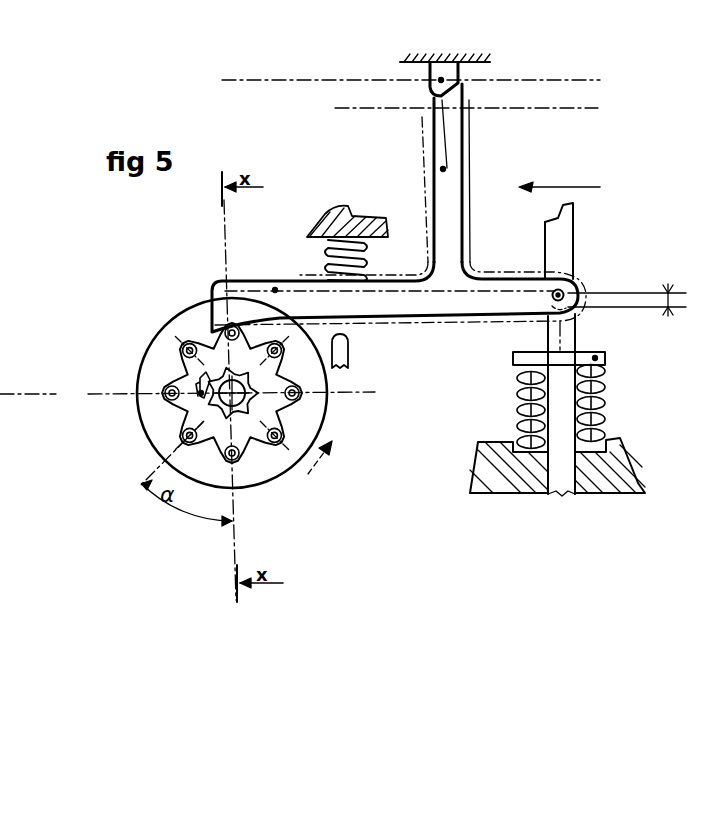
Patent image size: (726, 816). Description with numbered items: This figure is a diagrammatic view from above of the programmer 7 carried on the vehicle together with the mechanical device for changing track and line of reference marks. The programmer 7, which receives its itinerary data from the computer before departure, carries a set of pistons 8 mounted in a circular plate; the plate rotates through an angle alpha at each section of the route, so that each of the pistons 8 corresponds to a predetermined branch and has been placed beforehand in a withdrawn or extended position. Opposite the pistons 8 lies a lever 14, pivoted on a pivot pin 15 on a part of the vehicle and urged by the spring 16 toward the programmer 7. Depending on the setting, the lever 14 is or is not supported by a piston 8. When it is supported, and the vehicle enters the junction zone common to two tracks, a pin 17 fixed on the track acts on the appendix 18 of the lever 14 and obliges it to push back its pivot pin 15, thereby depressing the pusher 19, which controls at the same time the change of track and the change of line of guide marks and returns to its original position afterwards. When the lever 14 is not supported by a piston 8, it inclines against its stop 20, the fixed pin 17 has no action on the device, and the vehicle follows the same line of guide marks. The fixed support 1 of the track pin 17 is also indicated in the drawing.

The fixed support 1 is at (412, 61).
The programmer 7 is at (92, 340).
The pistons 8 is at (298, 397).
The lever 14 is at (275, 290).
The pivot pin 15 is at (564, 293).
The spring 16 is at (366, 250).
The pin 17 is at (441, 79).
The appendix 18 is at (443, 169).
The pusher 19 is at (596, 357).
The stop 20 is at (342, 352).